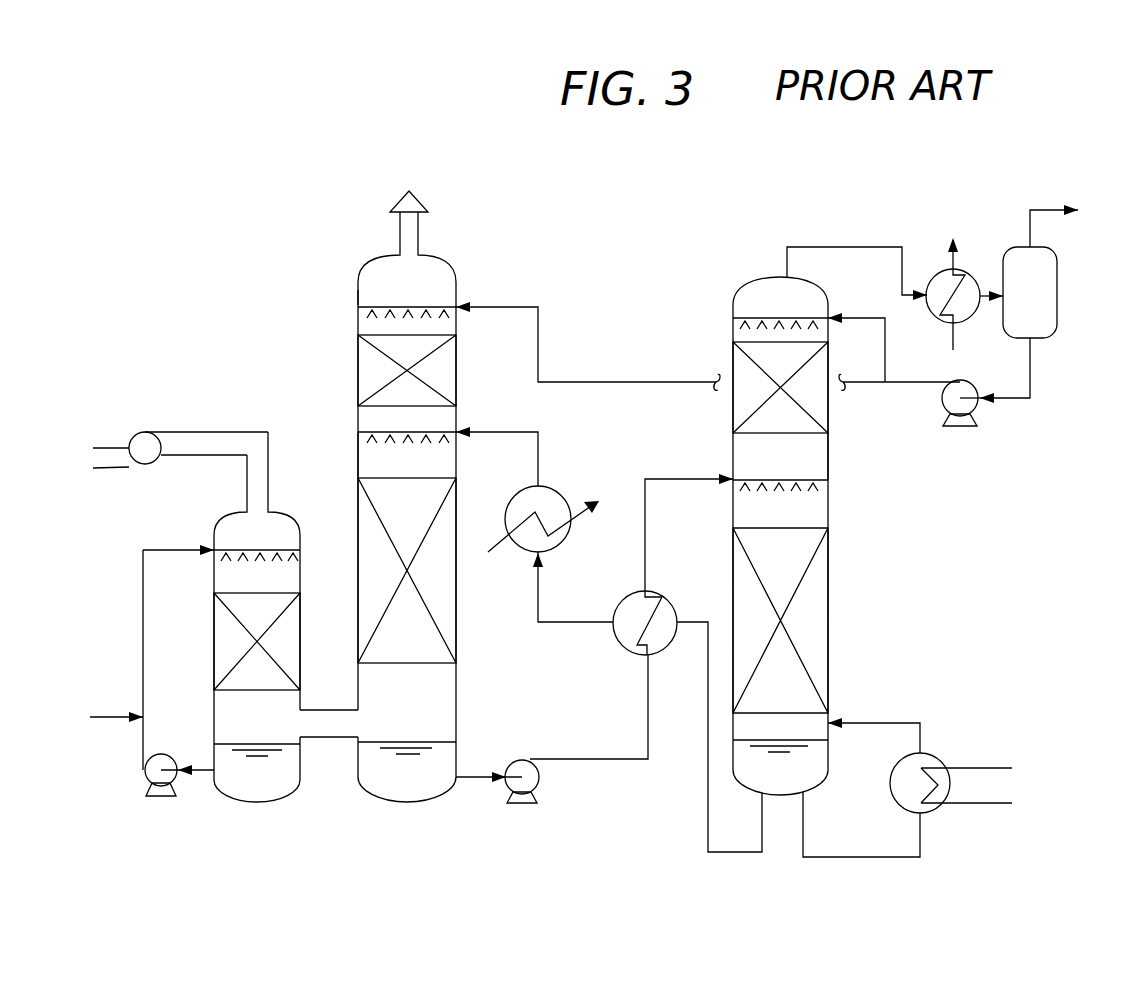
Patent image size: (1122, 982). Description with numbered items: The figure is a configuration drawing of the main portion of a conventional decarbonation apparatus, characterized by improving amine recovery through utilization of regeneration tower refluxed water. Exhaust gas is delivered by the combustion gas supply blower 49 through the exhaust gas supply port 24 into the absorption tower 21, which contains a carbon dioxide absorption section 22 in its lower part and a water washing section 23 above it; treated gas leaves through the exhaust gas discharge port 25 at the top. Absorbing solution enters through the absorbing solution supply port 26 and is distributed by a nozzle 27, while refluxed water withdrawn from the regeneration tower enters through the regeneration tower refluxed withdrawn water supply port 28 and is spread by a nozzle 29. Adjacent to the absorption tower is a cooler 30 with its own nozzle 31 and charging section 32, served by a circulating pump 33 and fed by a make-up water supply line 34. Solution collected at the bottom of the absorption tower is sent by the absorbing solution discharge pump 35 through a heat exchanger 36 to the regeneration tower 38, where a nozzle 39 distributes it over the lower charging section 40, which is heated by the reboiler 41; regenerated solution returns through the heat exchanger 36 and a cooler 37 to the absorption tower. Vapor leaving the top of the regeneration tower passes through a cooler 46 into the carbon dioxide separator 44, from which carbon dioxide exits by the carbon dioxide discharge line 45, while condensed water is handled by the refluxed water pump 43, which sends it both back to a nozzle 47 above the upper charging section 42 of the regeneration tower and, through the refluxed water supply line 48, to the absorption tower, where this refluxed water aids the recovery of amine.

The absorption tower 21 is at (461, 394).
The carbon dioxide absorption section 22 is at (458, 612).
The water washing section 23 is at (460, 353).
The exhaust gas supply port 24 is at (345, 742).
The exhaust gas discharge port 25 is at (420, 204).
The absorbing solution supply port 26 is at (457, 437).
The nozzle 27 is at (362, 442).
The regeneration tower refluxed withdrawn water supply port 28 is at (458, 304).
The nozzle 29 is at (366, 306).
The cooler 30 is at (286, 514).
The nozzle 31 is at (297, 561).
The charging section 32 is at (293, 657).
The circulating pump 33 is at (147, 782).
The make-up water supply line 34 is at (104, 722).
The absorbing solution discharge pump 35 is at (522, 803).
The heat exchanger 36 is at (667, 600).
The cooler 37 is at (568, 545).
The regeneration tower 38 is at (832, 456).
The nozzle 39 is at (828, 484).
The lower charging section 40 is at (832, 590).
The reboiler 41 is at (934, 808).
The upper charging section 42 is at (838, 404).
The refluxed water pump 43 is at (983, 414).
The carbon dioxide separator 44 is at (1041, 339).
The carbon dioxide discharge line 45 is at (1032, 208).
The cooler 46 is at (938, 268).
The nozzle 47 is at (752, 318).
The refluxed water supply line 48 is at (612, 382).
The combustion gas supply blower 49 is at (142, 432).